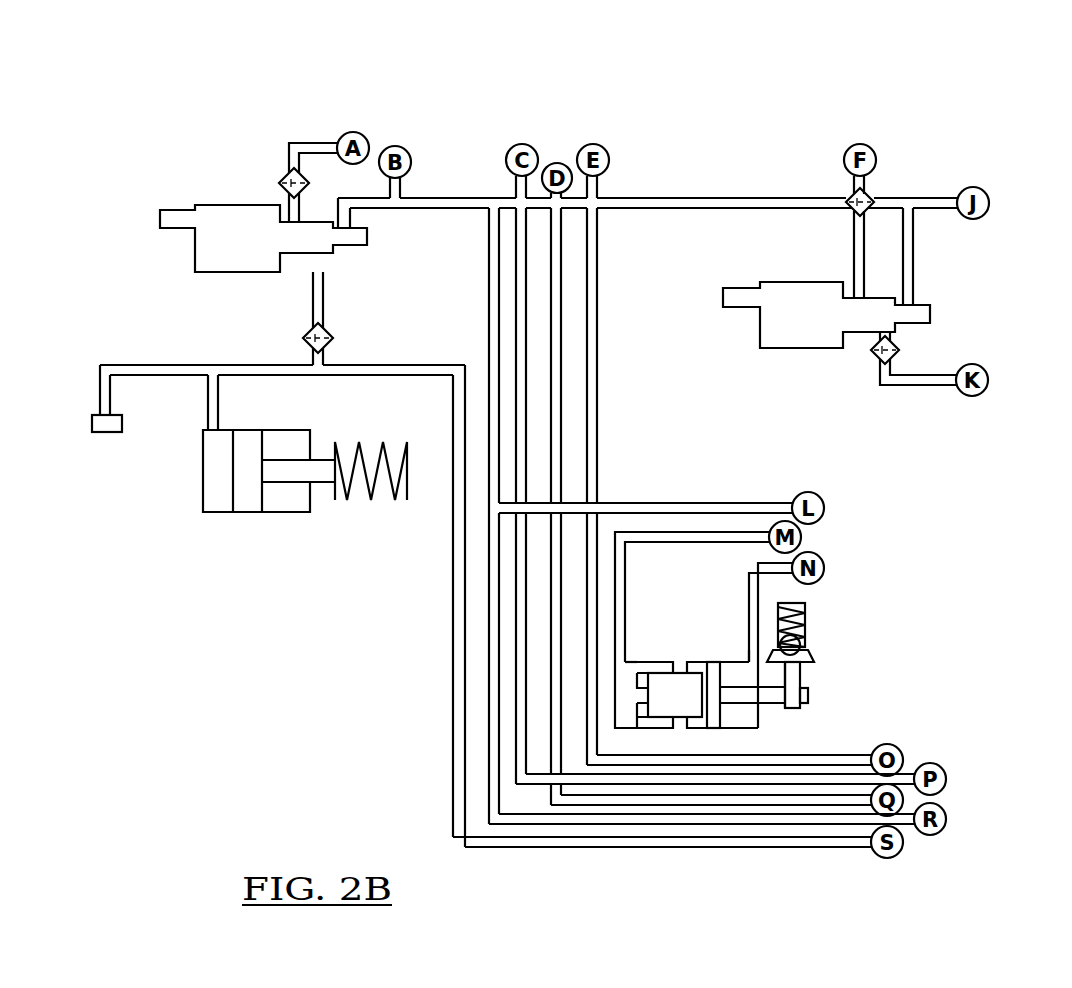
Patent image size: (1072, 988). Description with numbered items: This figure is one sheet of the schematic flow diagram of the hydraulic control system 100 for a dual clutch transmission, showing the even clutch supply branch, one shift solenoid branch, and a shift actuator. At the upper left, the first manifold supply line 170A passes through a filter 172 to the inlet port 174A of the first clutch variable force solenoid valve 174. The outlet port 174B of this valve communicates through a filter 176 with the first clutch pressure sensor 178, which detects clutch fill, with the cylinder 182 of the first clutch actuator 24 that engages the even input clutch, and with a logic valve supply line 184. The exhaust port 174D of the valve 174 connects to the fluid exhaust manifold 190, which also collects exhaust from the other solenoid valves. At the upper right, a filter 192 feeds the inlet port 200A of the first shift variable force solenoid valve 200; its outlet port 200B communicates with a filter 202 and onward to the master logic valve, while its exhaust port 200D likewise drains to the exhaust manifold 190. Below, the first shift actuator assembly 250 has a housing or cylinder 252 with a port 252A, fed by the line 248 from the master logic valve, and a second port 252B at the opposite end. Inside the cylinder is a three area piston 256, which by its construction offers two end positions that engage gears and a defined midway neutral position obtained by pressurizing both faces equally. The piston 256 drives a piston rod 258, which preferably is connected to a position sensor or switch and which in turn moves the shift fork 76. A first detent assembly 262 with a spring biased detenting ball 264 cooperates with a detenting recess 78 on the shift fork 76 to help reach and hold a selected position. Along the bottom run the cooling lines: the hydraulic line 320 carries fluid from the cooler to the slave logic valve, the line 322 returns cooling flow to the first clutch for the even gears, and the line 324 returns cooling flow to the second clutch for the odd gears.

The hydraulic control system 100 is at (988, 131).
The first clutch actuator 24 is at (204, 530).
The shift fork 76 is at (803, 680).
The detenting recess 78 is at (774, 664).
The first manifold supply line 170A is at (289, 150).
The filter 172 is at (295, 168).
The first clutch variable force solenoid valve 174 is at (184, 256).
The inlet port 174A is at (289, 214).
The outlet port 174B is at (323, 260).
The exhaust port 174D is at (350, 233).
The filter 176 is at (325, 330).
The first clutch pressure sensor 178 is at (108, 436).
The cylinder 182 is at (290, 514).
The logic valve supply line 184 is at (396, 378).
The fluid exhaust manifold 190 is at (700, 210).
The filter 192 is at (850, 196).
The first shift variable force solenoid valve 200 is at (731, 340).
The inlet port 200A is at (857, 294).
The outlet port 200B is at (896, 327).
The exhaust port 200D is at (906, 304).
The filter 202 is at (880, 364).
The line 248 is at (683, 543).
The first shift actuator assembly 250 is at (913, 661).
The housing or cylinder 252 is at (657, 722).
The port 252A is at (622, 660).
The second port 252B is at (750, 647).
The three area piston 256 is at (660, 708).
The piston rod 258 is at (808, 698).
The first detent assembly 262 is at (804, 617).
The spring biased detenting ball 264 is at (815, 657).
The hydraulic line 320 is at (737, 787).
The line 322 is at (765, 807).
The line 324 is at (800, 767).